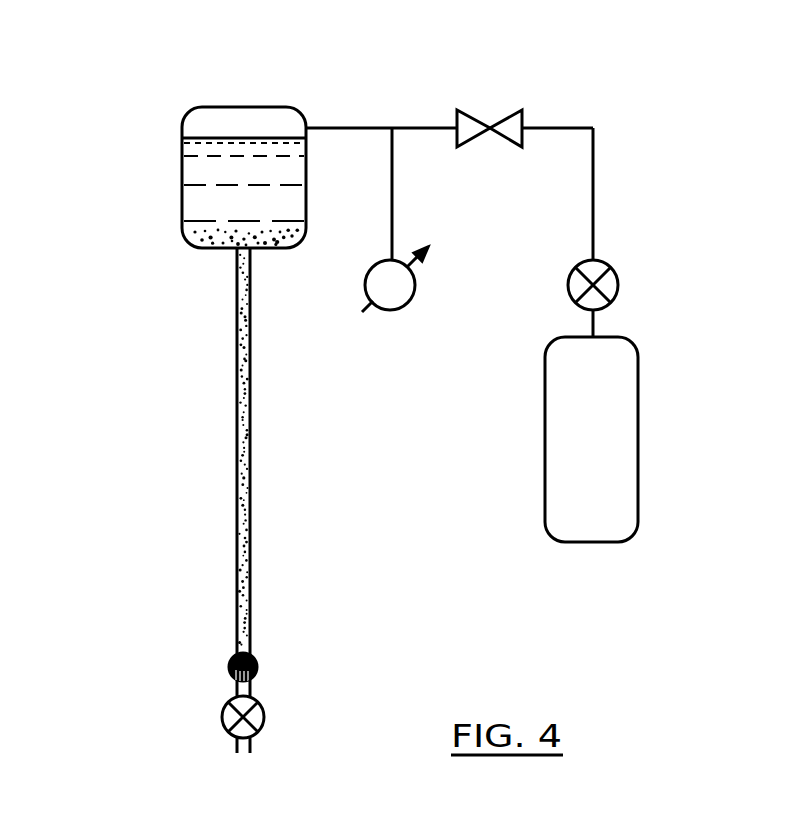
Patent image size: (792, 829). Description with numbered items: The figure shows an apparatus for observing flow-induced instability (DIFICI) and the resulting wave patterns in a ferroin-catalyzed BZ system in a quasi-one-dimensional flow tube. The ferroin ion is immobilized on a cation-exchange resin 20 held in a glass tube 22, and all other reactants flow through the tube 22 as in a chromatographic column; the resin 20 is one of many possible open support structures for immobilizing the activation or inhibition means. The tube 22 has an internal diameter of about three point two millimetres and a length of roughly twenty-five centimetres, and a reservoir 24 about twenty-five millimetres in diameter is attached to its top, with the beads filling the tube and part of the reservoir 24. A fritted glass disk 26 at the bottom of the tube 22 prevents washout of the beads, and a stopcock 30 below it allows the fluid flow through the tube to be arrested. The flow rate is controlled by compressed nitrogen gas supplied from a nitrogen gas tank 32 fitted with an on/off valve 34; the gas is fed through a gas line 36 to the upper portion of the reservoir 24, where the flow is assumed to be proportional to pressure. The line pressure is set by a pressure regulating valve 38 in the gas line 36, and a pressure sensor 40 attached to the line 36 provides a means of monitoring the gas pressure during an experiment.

The cation-exchange resin 20 is at (237, 516).
The tube 22 is at (250, 432).
The reservoir 24 is at (248, 107).
The fritted disk 26 is at (230, 668).
The stopcock 30 is at (222, 718).
The nitrogen gas tank 32 is at (640, 475).
The on/off valve 34 is at (617, 292).
The gas line 36 is at (345, 128).
The pressure regulating valve 38 is at (514, 110).
The pressure sensor 40 is at (411, 302).